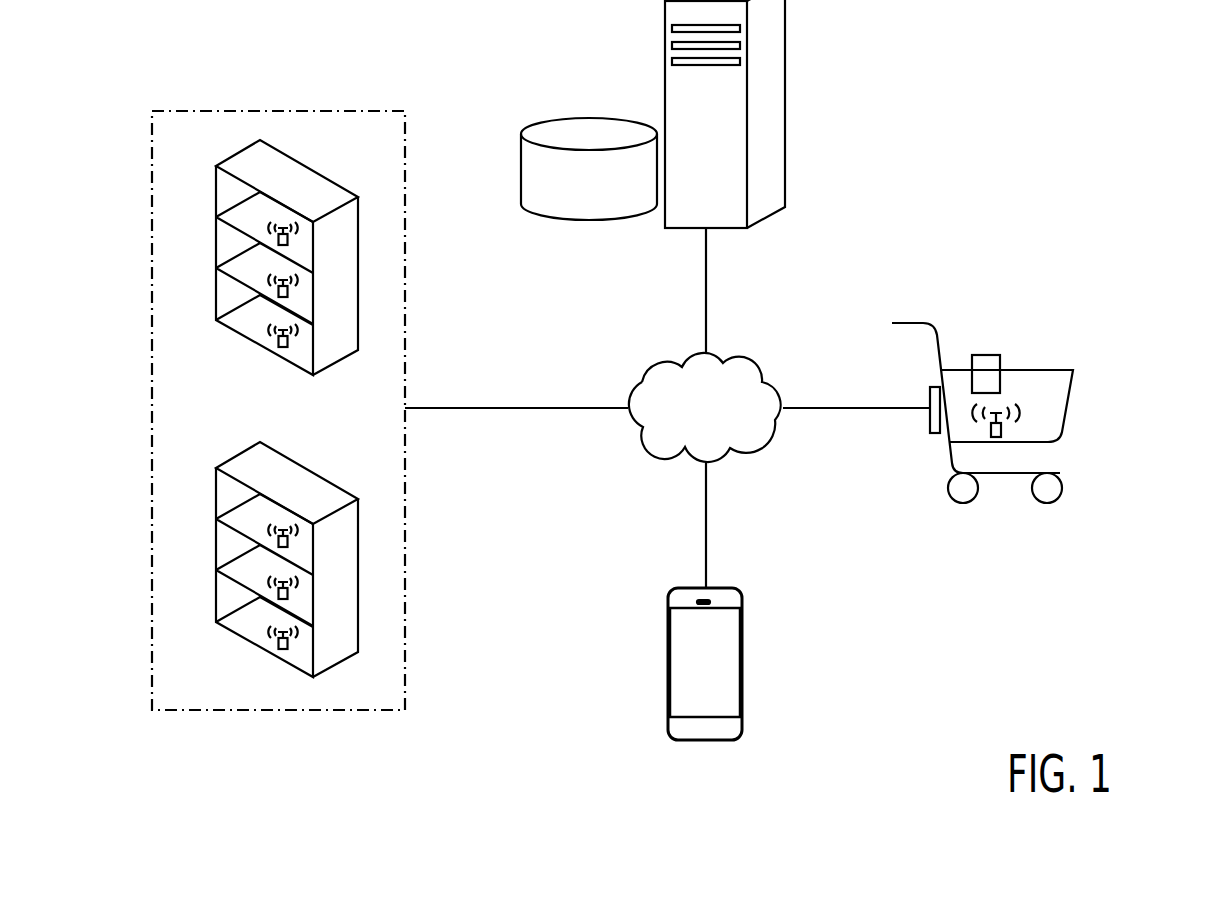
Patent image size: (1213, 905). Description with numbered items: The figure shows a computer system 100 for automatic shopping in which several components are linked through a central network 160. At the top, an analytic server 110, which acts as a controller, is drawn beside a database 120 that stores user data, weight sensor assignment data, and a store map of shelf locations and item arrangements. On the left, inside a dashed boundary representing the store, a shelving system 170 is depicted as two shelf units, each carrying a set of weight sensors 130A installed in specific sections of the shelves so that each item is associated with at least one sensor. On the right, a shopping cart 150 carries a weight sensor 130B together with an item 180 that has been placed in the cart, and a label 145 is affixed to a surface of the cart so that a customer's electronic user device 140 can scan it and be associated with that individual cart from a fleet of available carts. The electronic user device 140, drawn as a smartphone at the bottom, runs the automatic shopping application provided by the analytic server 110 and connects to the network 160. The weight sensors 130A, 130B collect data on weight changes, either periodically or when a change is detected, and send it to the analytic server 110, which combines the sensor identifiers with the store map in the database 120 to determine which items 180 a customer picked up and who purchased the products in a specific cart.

The system 100 is at (1094, 110).
The analytic server 110 is at (787, 150).
The database 120 is at (520, 172).
The weight sensors on shelves 130A is at (268, 297).
The weight sensor on shopping cart 130B is at (1002, 432).
The electronic user device 140 is at (742, 660).
The label 145 is at (931, 435).
The shopping cart 150 is at (1037, 370).
The network 160 is at (737, 353).
The shelving system 170 is at (322, 477).
The items 180 is at (987, 355).